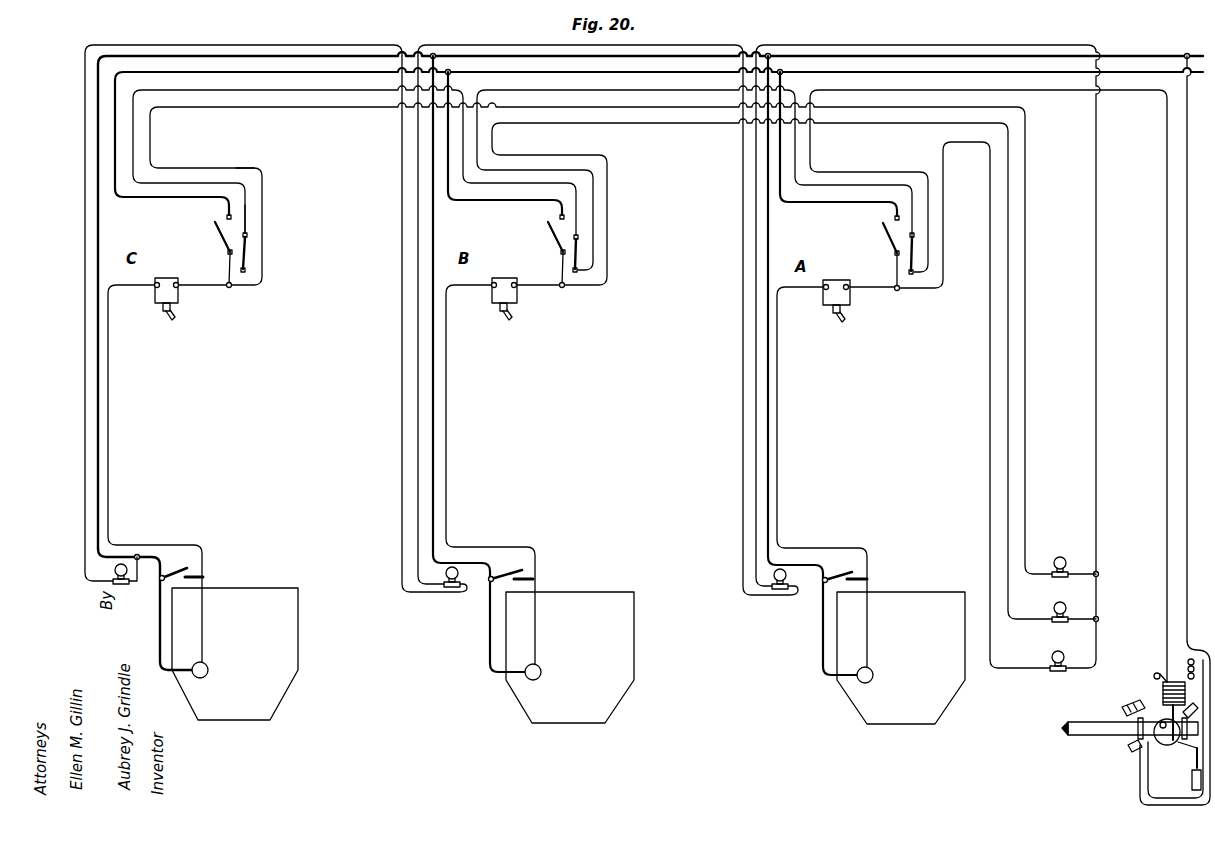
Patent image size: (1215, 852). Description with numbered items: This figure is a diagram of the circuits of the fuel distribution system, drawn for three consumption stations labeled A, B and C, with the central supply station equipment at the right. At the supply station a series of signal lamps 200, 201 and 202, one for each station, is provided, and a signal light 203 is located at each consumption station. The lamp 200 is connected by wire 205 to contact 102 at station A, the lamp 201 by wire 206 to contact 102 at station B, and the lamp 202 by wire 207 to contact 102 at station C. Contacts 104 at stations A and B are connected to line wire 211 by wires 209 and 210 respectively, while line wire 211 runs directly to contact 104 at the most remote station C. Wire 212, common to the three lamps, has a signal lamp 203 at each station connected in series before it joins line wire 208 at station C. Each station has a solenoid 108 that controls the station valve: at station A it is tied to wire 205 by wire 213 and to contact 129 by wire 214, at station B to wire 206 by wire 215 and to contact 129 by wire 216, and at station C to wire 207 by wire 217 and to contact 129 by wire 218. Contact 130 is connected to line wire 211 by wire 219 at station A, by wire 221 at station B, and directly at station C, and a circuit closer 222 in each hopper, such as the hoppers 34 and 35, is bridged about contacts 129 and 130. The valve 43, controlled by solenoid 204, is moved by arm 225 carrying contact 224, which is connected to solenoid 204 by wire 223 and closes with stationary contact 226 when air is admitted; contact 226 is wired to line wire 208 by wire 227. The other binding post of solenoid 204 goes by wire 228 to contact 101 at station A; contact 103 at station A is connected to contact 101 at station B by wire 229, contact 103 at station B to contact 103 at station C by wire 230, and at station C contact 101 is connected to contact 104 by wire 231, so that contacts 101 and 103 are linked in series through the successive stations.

The hopper 34 is at (845, 702).
The hopper 35 is at (631, 704).
The valve 43 is at (1177, 746).
The contact 101 is at (251, 258).
The contact 102 is at (212, 228).
The contact 103 is at (249, 235).
The contact 104 is at (893, 218).
The solenoid 108 is at (179, 298).
The contact 129 is at (206, 577).
The contact 130 is at (192, 571).
The signal lamp 200 is at (1053, 655).
The signal lamp 201 is at (1055, 605).
The signal lamp 202 is at (1070, 553).
The signal light 203 is at (128, 562).
The solenoid 204 is at (1165, 684).
The wire 205 is at (895, 262).
The wire 206 is at (561, 268).
The wire 207 is at (228, 267).
The line wire 208 is at (1158, 56).
The wire 209 is at (838, 150).
The wire 210 is at (505, 148).
The line wire 211 is at (99, 448).
The wire 212 is at (84, 385).
The wire 213 is at (895, 291).
The wire 214 is at (779, 324).
The wire 215 is at (554, 290).
The wire 216 is at (447, 320).
The wire 217 is at (246, 291).
The wire 218 is at (109, 331).
The wire 219 is at (779, 498).
The wire 221 is at (450, 464).
The circuit closer 222 is at (209, 671).
The wire 223 is at (1165, 671).
The contact 224 is at (1150, 696).
The arm 225 is at (1125, 706).
The stationary contact 226 is at (1134, 750).
The wire 227 is at (1186, 546).
The wire 228 is at (913, 182).
The wire 229 is at (582, 172).
The wire 230 is at (256, 165).
The wire 231 is at (247, 223).